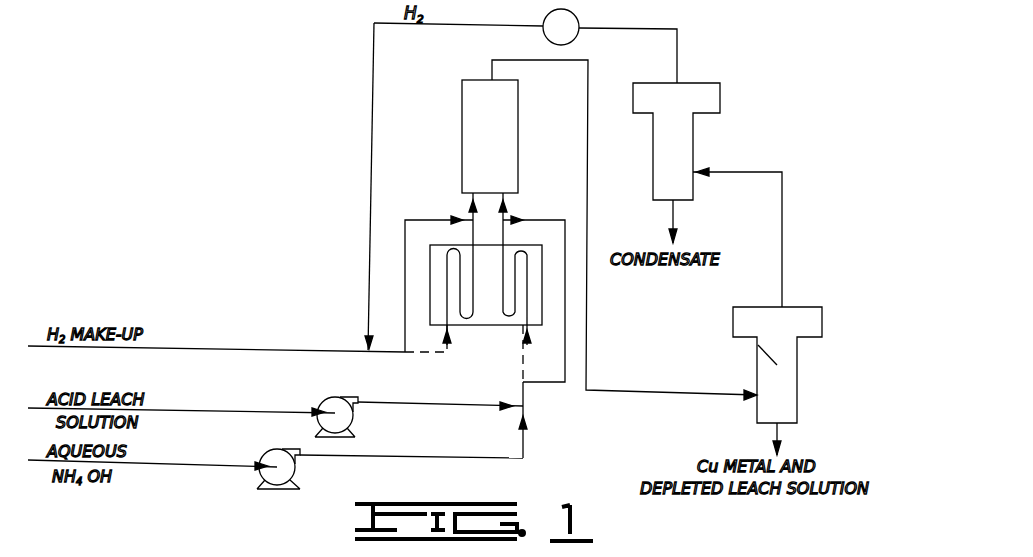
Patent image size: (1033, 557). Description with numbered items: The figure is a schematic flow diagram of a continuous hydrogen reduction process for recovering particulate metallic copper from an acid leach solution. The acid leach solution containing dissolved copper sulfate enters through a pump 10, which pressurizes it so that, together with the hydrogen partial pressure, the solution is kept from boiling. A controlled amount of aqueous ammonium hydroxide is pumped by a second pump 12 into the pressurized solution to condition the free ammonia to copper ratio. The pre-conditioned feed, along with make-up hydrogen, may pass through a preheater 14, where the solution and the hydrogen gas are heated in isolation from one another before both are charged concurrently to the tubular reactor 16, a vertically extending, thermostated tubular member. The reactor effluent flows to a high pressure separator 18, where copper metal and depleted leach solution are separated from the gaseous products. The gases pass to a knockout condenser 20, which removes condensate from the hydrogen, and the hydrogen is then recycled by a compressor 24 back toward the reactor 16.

The pump 10 is at (342, 400).
The pump 12 is at (284, 456).
The preheater 14 is at (484, 314).
The tubular reactor 16 is at (470, 129).
The high pressure separator 18 is at (770, 376).
The knockout condenser 20 is at (663, 150).
The compressor 24 is at (567, 17).